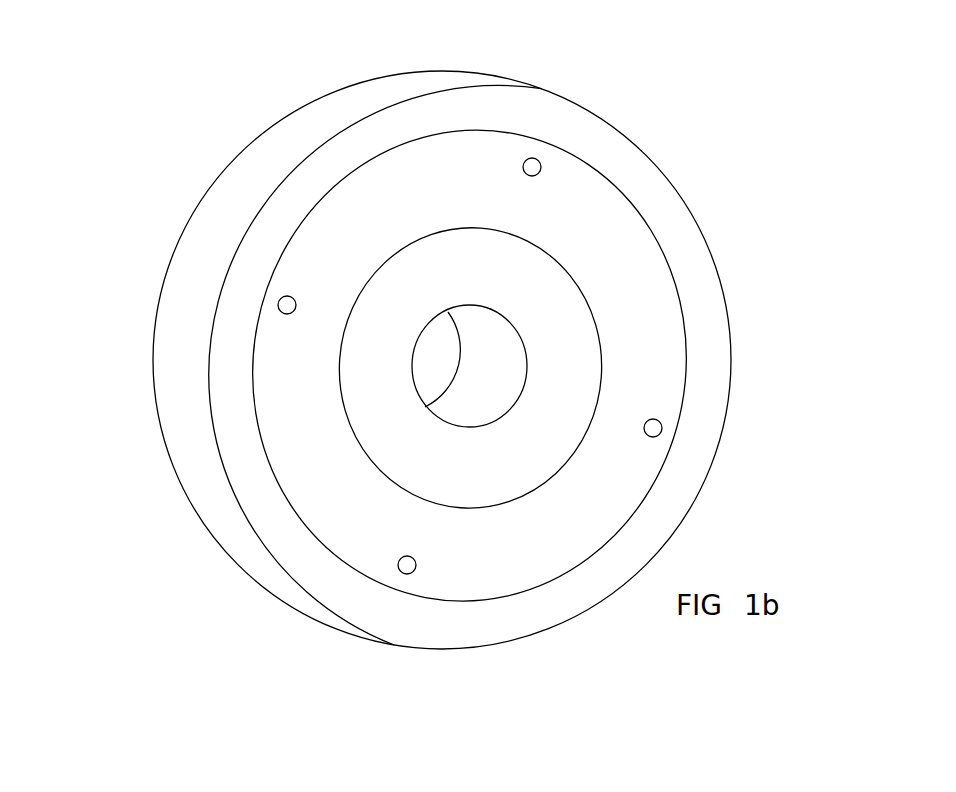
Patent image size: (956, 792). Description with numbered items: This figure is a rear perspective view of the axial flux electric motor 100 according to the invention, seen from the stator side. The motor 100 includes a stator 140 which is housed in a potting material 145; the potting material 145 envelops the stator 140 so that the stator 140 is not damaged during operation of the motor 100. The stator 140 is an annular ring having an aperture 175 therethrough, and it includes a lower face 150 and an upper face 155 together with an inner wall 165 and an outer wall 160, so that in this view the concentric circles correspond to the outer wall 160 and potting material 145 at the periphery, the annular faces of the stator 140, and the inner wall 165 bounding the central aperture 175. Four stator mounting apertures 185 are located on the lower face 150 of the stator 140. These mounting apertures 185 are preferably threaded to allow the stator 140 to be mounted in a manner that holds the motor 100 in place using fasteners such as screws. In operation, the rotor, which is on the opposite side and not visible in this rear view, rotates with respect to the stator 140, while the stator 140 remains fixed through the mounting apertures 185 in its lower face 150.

The axial flux electric motor 100 is at (668, 128).
The upper face 155 is at (160, 232).
The outer wall 160 is at (243, 173).
The potting material 145 is at (705, 322).
The lower face 150 is at (678, 233).
The stator mounting apertures 185 is at (531, 158).
The stator 140 is at (307, 426).
The inner wall 165 is at (500, 353).
The aperture 175 is at (430, 365).